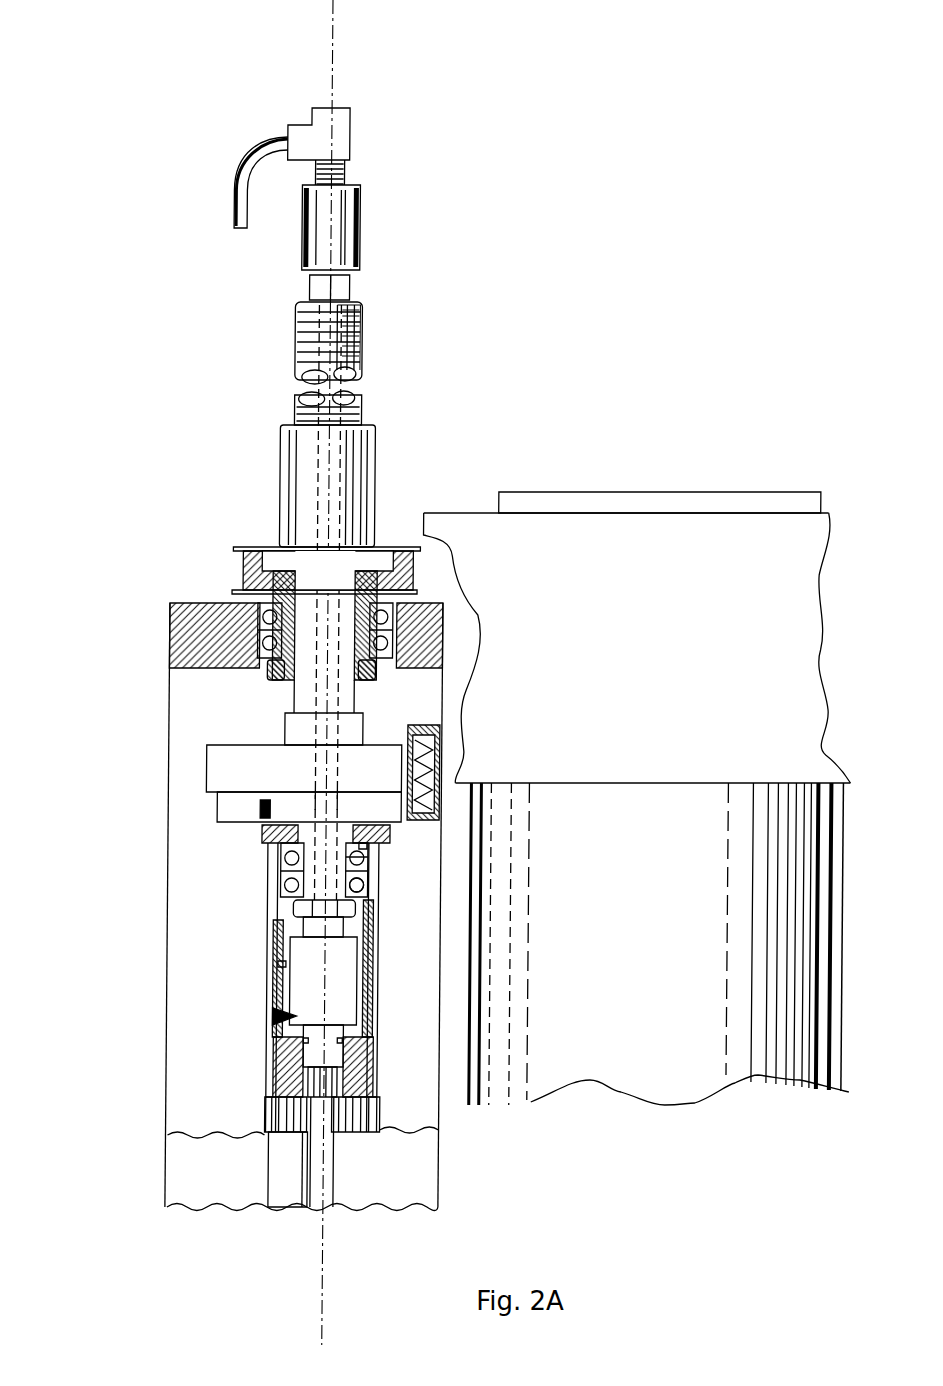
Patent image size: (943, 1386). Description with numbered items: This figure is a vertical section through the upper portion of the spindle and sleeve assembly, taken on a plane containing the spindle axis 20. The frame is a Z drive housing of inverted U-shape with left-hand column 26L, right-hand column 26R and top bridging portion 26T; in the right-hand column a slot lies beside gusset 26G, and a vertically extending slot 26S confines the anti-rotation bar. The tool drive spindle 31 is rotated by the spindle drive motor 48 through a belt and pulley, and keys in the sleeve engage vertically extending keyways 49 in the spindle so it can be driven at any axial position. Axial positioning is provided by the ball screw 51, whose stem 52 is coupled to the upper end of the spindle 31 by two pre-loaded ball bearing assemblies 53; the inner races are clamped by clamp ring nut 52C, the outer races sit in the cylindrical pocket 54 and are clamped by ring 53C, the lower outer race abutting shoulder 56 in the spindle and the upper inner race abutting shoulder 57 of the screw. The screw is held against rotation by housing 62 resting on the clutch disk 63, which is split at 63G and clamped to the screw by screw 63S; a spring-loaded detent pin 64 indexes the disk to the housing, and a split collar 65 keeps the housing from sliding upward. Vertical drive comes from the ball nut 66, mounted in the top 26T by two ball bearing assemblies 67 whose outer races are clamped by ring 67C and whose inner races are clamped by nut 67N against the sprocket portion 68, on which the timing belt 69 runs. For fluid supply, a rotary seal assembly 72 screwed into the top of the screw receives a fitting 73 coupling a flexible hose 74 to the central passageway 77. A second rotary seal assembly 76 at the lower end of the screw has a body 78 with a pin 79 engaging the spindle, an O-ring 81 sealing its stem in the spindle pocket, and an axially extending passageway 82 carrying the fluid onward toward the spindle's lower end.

The spindle axis 20 is at (331, 45).
The fitting 73 is at (346, 137).
The flexible hose 74 is at (234, 178).
The rotary seal assembly 72 is at (340, 230).
The ball screw 51 is at (311, 350).
The central passageway 77 is at (348, 340).
The ball nut 66 is at (284, 478).
The timing belt 69 is at (240, 550).
The sprocket portion 68 is at (245, 583).
The ring 67C is at (250, 600).
The ball bearing assemblies 67 is at (267, 650).
The top bridging portion 26T is at (198, 640).
The nut 67N is at (273, 678).
The left-hand column 26L is at (198, 725).
The housing 62 is at (213, 765).
The split 63G is at (327, 797).
The clutch disk 63 is at (220, 805).
The screw 63S is at (270, 812).
The ring 53C is at (274, 836).
The ball bearing assemblies 53 is at (280, 854).
The stem 52 is at (312, 884).
The clamp ring nut 52C is at (301, 912).
The pin 79 is at (288, 963).
The body 78 is at (301, 994).
The rotary seal assembly 76 is at (282, 1017).
The O-ring 81 is at (312, 1040).
The keyways 49 is at (280, 1067).
The right-hand column 26R is at (188, 1168).
The tool drive spindle 31 is at (297, 1095).
The gusset 26G is at (303, 1195).
The slot 26S is at (338, 1198).
The axially extending passageway 82 is at (334, 1097).
The split collar 65 is at (369, 720).
The spring-loaded detent pin 64 is at (446, 777).
The shoulder 57 is at (374, 846).
The cylindrical pocket 54 is at (366, 857).
The shoulder 56 is at (367, 886).
The spindle drive motor 48 is at (663, 945).